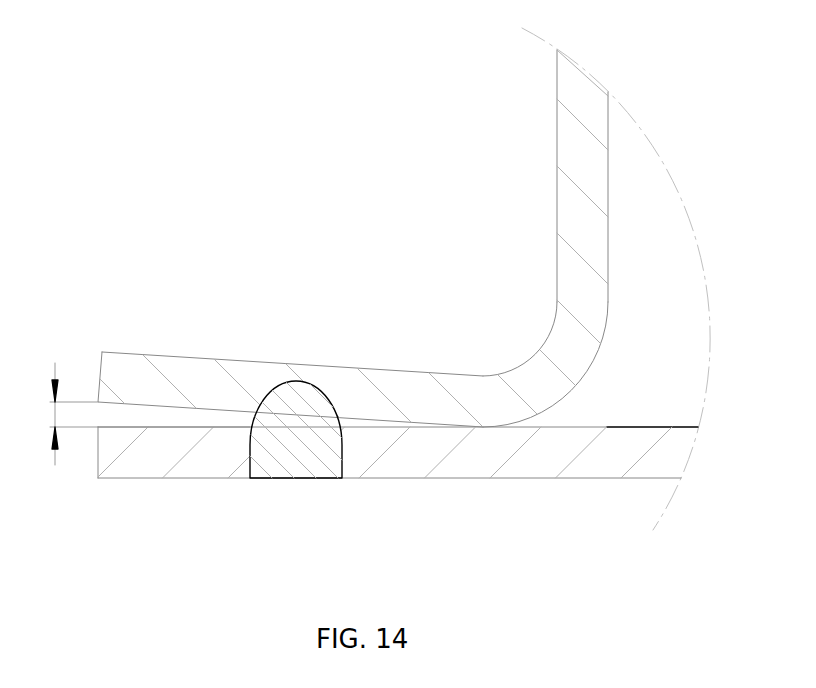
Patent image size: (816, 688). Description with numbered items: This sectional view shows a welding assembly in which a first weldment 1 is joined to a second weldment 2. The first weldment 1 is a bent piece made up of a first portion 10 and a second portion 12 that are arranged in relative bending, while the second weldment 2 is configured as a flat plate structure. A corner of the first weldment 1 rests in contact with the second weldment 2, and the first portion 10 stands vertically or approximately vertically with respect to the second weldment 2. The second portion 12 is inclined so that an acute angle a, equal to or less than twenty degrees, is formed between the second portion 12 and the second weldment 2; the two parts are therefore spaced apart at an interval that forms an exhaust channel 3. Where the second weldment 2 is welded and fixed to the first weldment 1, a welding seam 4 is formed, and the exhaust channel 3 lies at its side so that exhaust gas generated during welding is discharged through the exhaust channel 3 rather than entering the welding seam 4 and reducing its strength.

The first weldment 1 is at (389, 239).
The second weldment 2 is at (477, 460).
The exhaust channel 3 is at (313, 462).
The welding seam 4 is at (208, 425).
The first portion 10 is at (590, 157).
The second portion 12 is at (410, 402).
The acute angle a is at (58, 410).